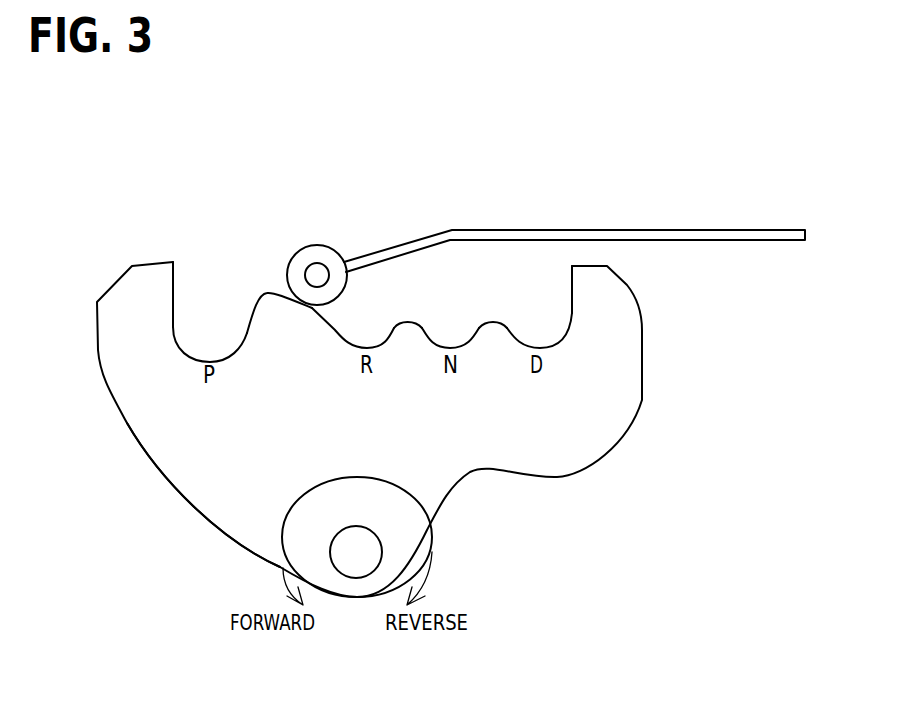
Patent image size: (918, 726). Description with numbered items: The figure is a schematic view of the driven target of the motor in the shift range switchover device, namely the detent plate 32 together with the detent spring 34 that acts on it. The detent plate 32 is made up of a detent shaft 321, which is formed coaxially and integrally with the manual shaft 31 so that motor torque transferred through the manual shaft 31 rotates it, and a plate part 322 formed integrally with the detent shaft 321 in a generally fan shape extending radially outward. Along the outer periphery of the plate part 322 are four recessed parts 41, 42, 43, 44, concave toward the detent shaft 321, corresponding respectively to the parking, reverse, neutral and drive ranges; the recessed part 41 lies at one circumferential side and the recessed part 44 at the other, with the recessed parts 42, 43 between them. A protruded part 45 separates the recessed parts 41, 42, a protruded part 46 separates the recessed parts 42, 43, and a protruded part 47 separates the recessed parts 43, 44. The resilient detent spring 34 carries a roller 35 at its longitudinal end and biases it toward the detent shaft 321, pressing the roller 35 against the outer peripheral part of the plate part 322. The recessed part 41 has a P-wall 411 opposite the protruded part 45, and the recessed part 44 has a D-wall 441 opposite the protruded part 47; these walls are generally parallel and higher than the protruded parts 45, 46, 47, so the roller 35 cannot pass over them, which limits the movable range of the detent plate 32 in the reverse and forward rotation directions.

The manual shaft 31 is at (356, 599).
The detent plate 32 is at (247, 522).
The detent shaft 321 is at (357, 575).
The plate part 322 is at (203, 480).
The detent spring 34 is at (721, 237).
The roller 35 is at (317, 243).
The recessed part 41 is at (208, 360).
The P-wall 411 is at (175, 278).
The recessed part 42 is at (367, 347).
The recessed part 43 is at (450, 347).
The recessed part 44 is at (537, 347).
The D-wall 441 is at (570, 280).
The protruded part 45 is at (267, 290).
The protruded part 46 is at (408, 320).
The protruded part 47 is at (492, 320).